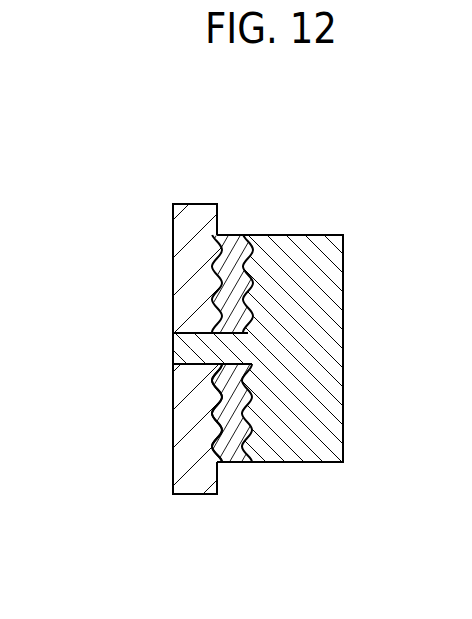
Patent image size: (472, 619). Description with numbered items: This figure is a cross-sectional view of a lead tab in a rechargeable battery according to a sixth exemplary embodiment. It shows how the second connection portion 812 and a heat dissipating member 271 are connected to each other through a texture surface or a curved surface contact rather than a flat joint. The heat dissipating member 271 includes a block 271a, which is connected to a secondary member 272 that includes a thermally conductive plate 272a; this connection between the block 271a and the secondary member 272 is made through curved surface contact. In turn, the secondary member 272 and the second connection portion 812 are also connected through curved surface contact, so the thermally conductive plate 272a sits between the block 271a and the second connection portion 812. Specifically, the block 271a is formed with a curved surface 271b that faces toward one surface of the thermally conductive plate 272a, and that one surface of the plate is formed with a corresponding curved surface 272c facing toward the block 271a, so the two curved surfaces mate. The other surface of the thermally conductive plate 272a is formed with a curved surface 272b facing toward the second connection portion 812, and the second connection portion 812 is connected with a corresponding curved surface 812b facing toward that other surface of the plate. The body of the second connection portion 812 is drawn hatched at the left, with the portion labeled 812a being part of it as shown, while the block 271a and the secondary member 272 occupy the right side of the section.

The second connection portion 812 is at (132, 349).
The mounting body 812a is at (187, 310).
The corresponding curved surface 812b is at (215, 268).
The heat dissipating member 271 is at (270, 239).
The block 271a is at (315, 253).
The curved surface 271b is at (252, 252).
The secondary member 272 is at (287, 475).
The thermally conductive plate 272a is at (236, 425).
The curved surface 272b is at (230, 462).
The corresponding curved surface 272c is at (250, 380).